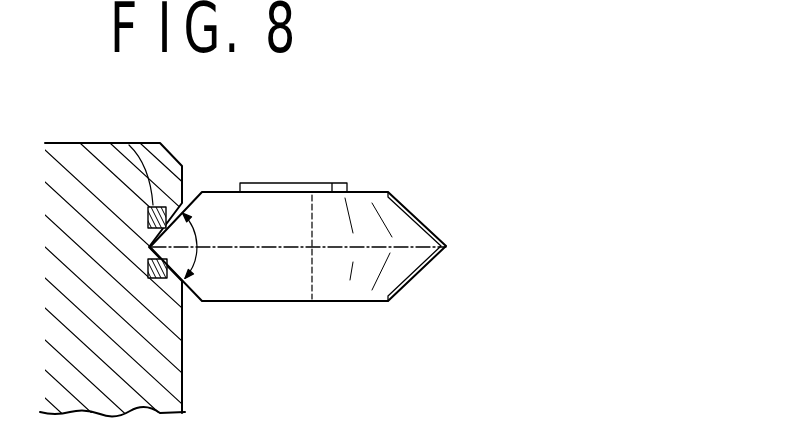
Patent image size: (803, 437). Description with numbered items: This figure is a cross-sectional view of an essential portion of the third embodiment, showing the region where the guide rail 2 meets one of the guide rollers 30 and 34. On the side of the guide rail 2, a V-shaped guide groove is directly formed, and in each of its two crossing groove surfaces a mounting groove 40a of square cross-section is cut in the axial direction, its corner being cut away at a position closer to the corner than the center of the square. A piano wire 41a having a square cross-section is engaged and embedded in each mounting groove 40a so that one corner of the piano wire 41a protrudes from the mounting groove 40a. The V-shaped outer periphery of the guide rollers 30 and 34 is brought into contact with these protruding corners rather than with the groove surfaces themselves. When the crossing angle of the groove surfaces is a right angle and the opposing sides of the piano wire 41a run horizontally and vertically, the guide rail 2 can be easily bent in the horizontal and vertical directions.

The guide rail 2 is at (61, 141).
The guide roller 30 is at (400, 222).
The guide roller 34 is at (298, 242).
The mounting groove 40a is at (148, 207).
The piano wire 41a is at (152, 207).